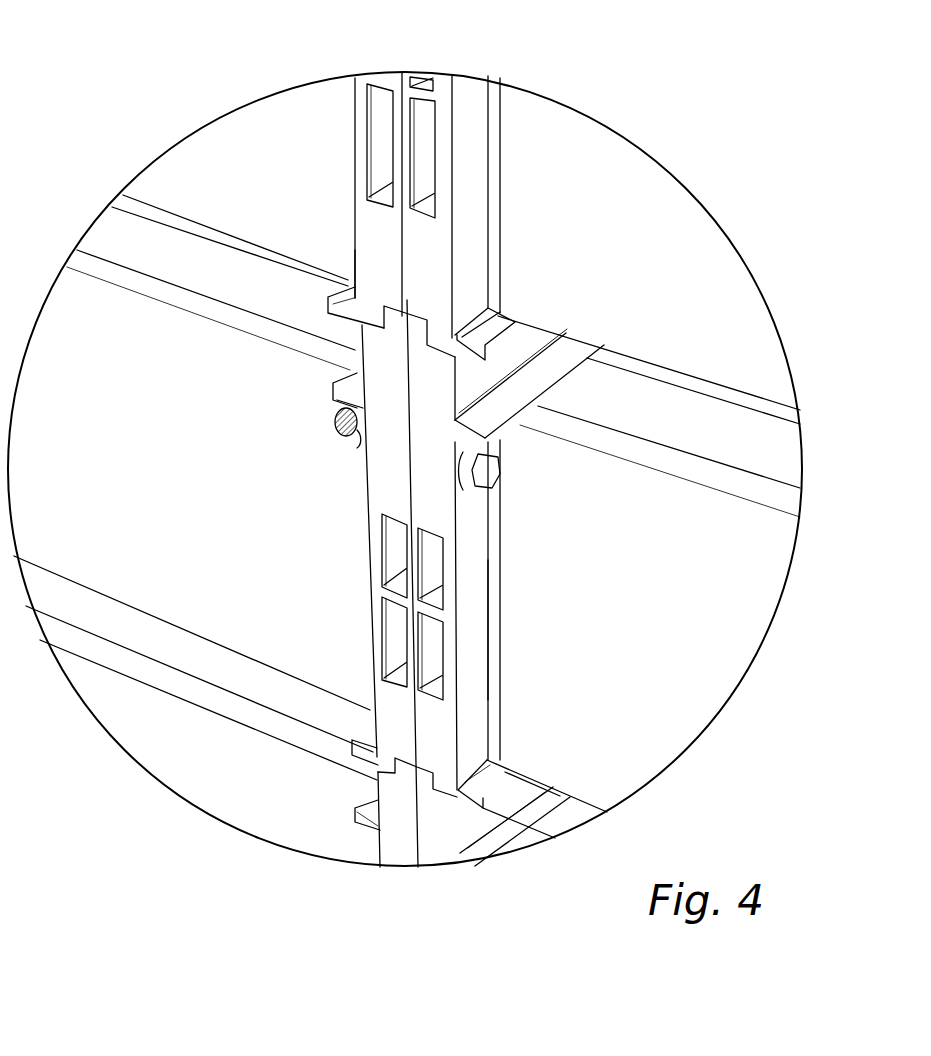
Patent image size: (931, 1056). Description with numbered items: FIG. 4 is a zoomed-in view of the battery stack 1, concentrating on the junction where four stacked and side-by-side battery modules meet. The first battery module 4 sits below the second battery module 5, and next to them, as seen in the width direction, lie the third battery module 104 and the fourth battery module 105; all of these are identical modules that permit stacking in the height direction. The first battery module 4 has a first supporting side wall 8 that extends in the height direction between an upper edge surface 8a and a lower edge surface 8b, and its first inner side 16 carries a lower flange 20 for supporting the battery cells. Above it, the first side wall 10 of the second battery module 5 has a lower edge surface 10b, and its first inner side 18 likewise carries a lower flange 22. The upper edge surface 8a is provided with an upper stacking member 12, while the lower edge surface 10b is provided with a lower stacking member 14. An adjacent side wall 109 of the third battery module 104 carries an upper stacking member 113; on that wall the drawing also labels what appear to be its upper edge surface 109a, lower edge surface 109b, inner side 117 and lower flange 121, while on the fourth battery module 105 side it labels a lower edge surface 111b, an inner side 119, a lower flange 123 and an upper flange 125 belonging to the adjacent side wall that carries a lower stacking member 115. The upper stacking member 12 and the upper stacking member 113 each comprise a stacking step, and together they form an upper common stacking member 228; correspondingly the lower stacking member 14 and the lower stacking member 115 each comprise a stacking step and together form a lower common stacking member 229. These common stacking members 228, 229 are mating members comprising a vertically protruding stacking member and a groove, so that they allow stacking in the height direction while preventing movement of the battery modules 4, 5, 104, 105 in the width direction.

The battery stack 1 is at (603, 107).
The first battery module 4 is at (193, 617).
The second battery module 5 is at (150, 184).
The first supporting side wall 8 is at (367, 557).
The upper edge surface 8a is at (487, 268).
The lower edge surface 8b is at (380, 787).
The first supporting side wall 10 is at (339, 172).
The lower edge surface 10b is at (251, 396).
The upper stacking member 12 is at (400, 290).
The lower stacking member 14 is at (350, 362).
The first inner side 16 is at (370, 657).
The first inner side 18 is at (350, 173).
The lower flange 20 is at (353, 740).
The lower flange 22 is at (348, 282).
The third battery module 104 is at (722, 637).
The fourth battery module 105 is at (753, 357).
The adjacent side wall 109 is at (522, 583).
The upper end of connector 109a is at (522, 334).
The lower end of connector 109b is at (430, 778).
The cross beam 111b is at (573, 375).
The upper stacking member 113 is at (470, 429).
The lower stacking member 115 is at (529, 383).
The connector web 117 is at (470, 618).
The connector plate 119 is at (533, 218).
The lower flange 121 is at (505, 767).
The upper flange 123 is at (497, 326).
The fastener 125 is at (490, 418).
The upper common stacking member 228 is at (350, 258).
The lower common stacking member 229 is at (355, 400).